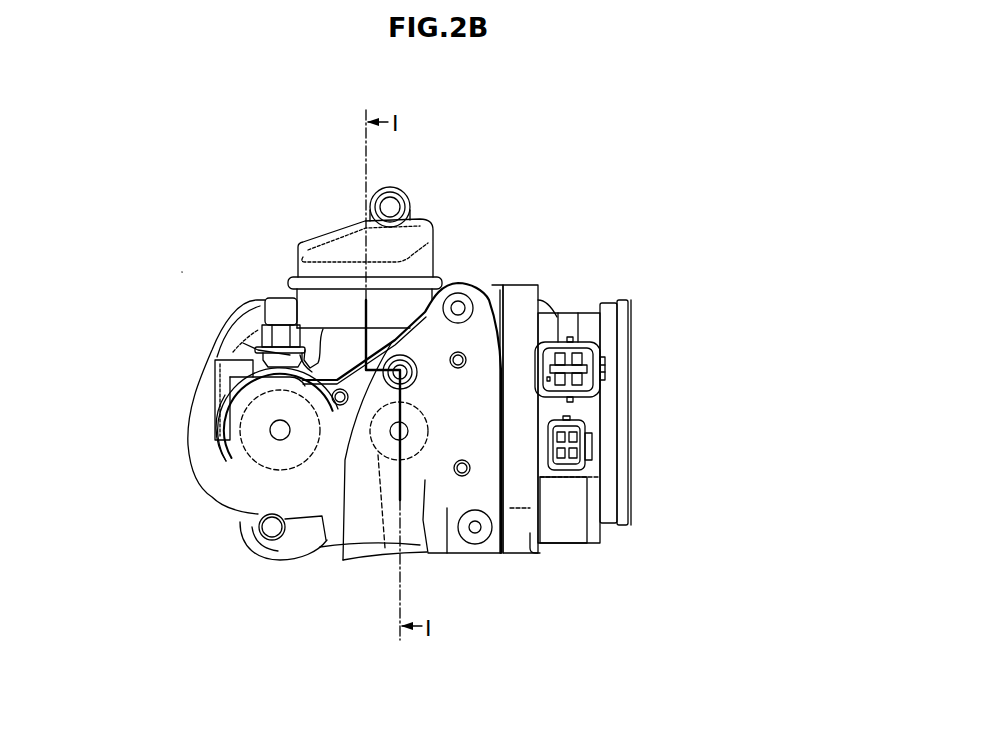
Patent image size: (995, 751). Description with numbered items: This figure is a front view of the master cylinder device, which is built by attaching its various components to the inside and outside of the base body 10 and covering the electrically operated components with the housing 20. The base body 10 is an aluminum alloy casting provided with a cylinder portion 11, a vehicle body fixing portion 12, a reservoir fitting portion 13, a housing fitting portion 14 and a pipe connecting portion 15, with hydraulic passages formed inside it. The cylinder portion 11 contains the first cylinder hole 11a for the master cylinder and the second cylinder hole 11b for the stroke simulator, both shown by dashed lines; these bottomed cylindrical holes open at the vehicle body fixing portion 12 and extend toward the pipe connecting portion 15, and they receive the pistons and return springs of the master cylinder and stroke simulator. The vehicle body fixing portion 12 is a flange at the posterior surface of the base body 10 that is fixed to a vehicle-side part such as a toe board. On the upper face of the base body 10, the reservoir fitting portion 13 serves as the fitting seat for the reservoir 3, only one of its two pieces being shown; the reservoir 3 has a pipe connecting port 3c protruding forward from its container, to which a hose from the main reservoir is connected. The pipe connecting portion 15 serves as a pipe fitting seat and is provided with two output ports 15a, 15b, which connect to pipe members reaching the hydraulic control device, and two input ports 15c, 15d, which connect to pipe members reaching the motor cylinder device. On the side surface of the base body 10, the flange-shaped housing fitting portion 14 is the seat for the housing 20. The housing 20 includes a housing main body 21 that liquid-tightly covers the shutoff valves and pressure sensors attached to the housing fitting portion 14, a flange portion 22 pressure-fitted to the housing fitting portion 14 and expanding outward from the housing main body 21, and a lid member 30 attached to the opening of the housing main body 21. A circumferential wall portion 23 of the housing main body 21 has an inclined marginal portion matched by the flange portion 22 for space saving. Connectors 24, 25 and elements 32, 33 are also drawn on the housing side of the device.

The reservoir 3 is at (320, 223).
The pipe connecting port 3c is at (409, 189).
The base body 10 is at (181, 271).
The cylinder portion 11 is at (209, 500).
The first cylinder hole 11a is at (386, 548).
The second cylinder hole 11b is at (212, 390).
The vehicle body fixing portion 12 is at (250, 306).
The reservoir fitting portion 13 is at (352, 348).
The housing fitting portion 14 is at (500, 284).
The pipe connecting portion 15 is at (360, 445).
The output port 15a is at (344, 545).
The output port 15b is at (468, 546).
The input port 15c is at (458, 296).
The input port 15d is at (491, 560).
The housing 20 is at (615, 263).
The housing main body 21 is at (565, 297).
The flange portion 22 is at (520, 546).
The circumferential wall portion 23 is at (568, 530).
The first connector 24 is at (603, 391).
The second connector 25 is at (588, 421).
The lid member 30 is at (631, 330).
The plate edge 32 is at (632, 498).
The flange plate 33 is at (627, 296).